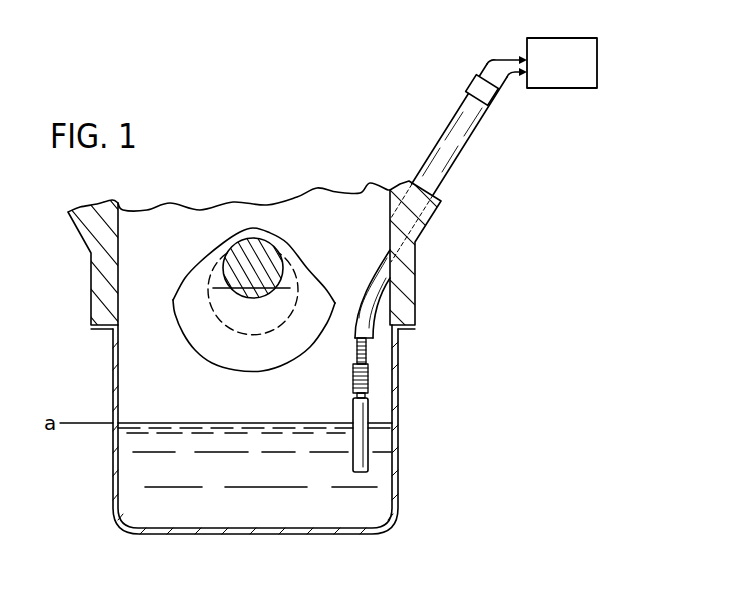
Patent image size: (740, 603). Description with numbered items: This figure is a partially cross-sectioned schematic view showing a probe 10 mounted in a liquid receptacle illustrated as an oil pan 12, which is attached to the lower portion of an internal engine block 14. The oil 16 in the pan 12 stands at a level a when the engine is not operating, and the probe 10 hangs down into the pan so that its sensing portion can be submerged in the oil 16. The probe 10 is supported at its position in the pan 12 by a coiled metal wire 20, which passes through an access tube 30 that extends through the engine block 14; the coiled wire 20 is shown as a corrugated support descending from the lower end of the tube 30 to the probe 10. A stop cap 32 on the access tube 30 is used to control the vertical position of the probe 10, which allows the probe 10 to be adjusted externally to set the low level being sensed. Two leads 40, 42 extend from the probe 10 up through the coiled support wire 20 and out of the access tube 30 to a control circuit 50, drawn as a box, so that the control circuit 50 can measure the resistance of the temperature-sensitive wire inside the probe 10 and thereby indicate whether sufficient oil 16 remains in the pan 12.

The probe 10 is at (370, 446).
The oil pan 12 is at (400, 488).
The engine block 14 is at (415, 292).
The oil 16 is at (327, 510).
The coiled metal wire 20 is at (364, 352).
The access tube 30 is at (461, 152).
The stop cap 32 is at (497, 104).
The lead 40 is at (502, 56).
The lead 42 is at (508, 74).
The control circuit 50 is at (575, 92).